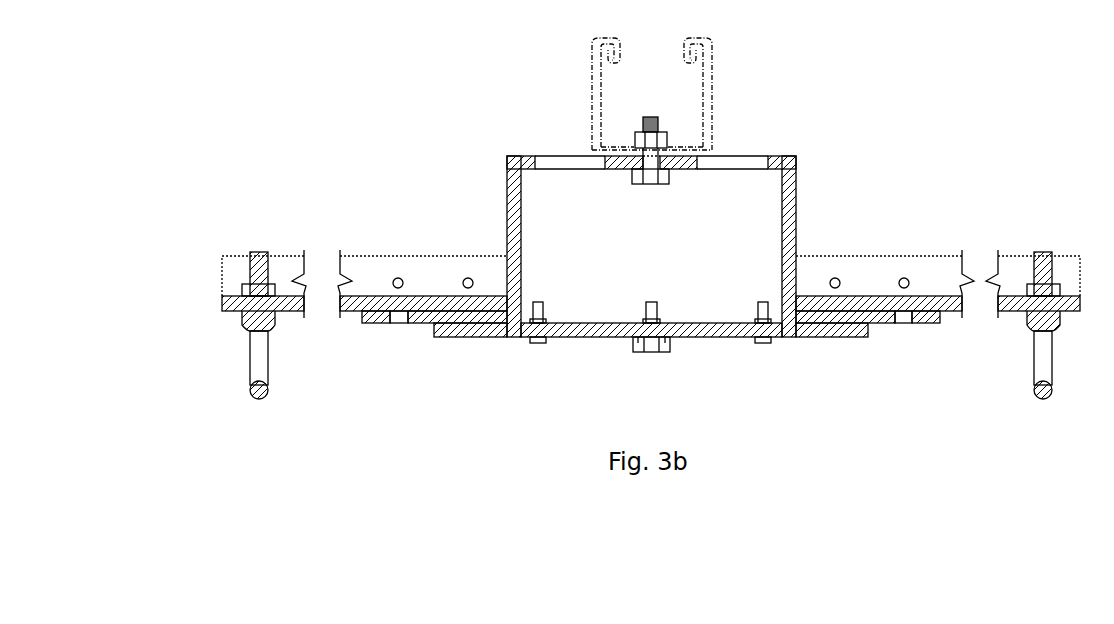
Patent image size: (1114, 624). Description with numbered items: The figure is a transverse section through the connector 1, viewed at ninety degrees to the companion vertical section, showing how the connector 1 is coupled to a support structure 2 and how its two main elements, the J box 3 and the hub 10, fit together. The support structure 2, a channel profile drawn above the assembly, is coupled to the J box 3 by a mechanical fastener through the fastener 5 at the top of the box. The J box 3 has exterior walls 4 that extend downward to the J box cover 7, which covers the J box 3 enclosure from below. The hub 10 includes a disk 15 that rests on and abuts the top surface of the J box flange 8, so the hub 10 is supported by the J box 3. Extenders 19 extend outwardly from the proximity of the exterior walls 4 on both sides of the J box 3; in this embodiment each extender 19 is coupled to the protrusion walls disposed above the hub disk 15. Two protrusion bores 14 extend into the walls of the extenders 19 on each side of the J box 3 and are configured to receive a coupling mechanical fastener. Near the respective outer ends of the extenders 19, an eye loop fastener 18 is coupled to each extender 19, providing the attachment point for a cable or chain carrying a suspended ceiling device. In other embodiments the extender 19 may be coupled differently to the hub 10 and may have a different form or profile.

The connector 1 is at (263, 112).
The support structure 2 is at (712, 75).
The J box 3 is at (796, 176).
The exterior walls 4 is at (685, 246).
The fastener 5 is at (655, 185).
The J box cover 7 is at (572, 340).
The J box flange 8 is at (466, 340).
The hub 10 is at (375, 325).
The protrusion bores 14 is at (905, 290).
The disk 15 is at (641, 354).
The eye loop fastener 18 is at (250, 391).
The extenders 19 is at (651, 289).